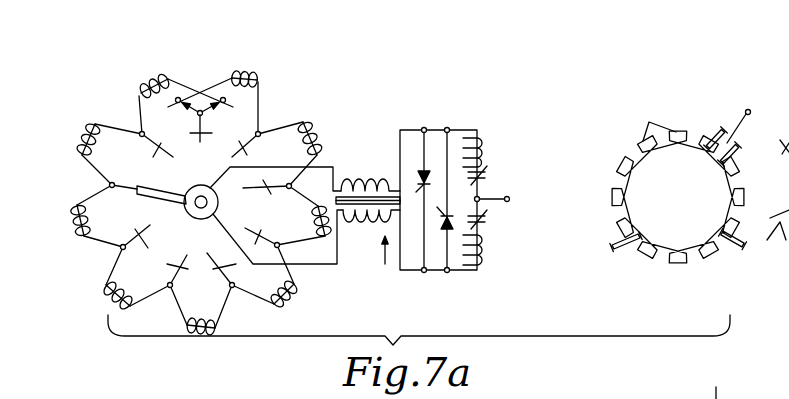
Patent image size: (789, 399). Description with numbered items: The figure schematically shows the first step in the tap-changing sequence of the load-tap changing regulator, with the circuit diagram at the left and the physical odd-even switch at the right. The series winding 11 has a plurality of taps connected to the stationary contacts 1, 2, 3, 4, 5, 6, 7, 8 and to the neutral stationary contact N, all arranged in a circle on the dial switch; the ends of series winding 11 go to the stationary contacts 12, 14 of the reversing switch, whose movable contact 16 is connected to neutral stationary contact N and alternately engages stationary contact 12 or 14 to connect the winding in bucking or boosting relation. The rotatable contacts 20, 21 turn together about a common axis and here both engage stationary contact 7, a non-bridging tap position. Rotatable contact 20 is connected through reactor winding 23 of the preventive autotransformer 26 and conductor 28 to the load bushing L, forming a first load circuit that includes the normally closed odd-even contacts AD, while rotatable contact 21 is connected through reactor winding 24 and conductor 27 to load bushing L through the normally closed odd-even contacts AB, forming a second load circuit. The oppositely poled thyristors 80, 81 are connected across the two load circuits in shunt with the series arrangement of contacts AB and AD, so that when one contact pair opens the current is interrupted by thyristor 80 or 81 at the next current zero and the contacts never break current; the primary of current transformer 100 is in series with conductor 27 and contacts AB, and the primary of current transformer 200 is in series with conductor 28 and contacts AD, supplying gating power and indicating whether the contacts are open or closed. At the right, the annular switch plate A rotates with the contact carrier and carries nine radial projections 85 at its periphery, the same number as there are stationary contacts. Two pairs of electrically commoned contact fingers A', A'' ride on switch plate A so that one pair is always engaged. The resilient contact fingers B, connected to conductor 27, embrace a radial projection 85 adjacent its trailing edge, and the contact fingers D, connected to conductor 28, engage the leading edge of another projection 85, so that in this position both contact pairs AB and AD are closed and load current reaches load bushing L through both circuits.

The stationary contact 1 is at (232, 147).
The stationary contact 2 is at (258, 186).
The stationary contact 3 is at (257, 223).
The stationary contact 4 is at (220, 257).
The stationary contact 5 is at (186, 257).
The stationary contact 6 is at (147, 243).
The stationary contact 7 is at (127, 190).
The stationary contact 8 is at (165, 146).
The series winding 11 is at (74, 154).
The stationary contact of reversing switch 12 is at (185, 108).
The stationary contact of reversing switch 14 is at (213, 104).
The movable contact of reversing switch 16 is at (184, 101).
The rotatable contact 20 is at (141, 198).
The rotatable contact 21 is at (143, 185).
The reactor winding 23 is at (361, 219).
The reactor winding 24 is at (368, 181).
The preventive autotransformer 26 is at (382, 266).
The conductor 27 is at (408, 129).
The conductor 28 is at (410, 271).
The thyristor 80 is at (419, 175).
The thyristor 81 is at (445, 229).
The current transformer 100 is at (485, 145).
The current transformer 200 is at (482, 266).
The odd-even switch contacts AB is at (486, 172).
The odd-even switch contacts AD is at (486, 228).
The load bushing L is at (507, 202).
The neutral stationary contact N is at (201, 146).
The switch plate A is at (678, 197).
The radial projection 85 is at (654, 119).
The contact fingers A' is at (708, 124).
The contact fingers A'' is at (746, 147).
The contact fingers B is at (620, 249).
The contact fingers D is at (733, 247).